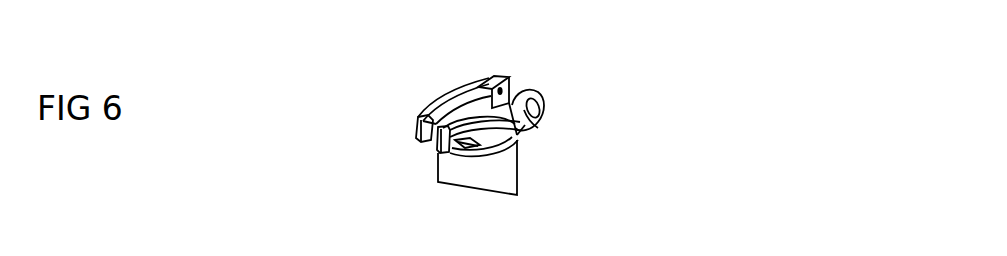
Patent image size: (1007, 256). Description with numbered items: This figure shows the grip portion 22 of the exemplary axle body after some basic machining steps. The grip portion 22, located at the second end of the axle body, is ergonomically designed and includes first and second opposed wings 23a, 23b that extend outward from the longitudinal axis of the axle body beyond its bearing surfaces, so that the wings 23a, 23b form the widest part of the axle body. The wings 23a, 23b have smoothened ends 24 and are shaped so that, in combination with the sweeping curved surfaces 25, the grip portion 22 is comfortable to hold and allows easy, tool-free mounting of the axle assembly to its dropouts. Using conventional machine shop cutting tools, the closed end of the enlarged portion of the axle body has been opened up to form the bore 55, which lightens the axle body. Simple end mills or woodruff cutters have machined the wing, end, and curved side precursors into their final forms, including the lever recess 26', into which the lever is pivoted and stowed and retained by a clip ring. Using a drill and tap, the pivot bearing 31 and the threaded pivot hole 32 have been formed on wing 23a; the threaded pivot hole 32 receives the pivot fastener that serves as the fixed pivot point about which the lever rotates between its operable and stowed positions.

The grip portion 22 is at (605, 117).
The first wing 23a is at (412, 146).
The second wing 23b is at (547, 117).
The smoothened ends 24 is at (506, 78).
The sweeping curved surfaces 25 is at (505, 137).
The lever recess 26' is at (455, 136).
The pivot bearing 31 is at (537, 124).
The threaded pivot hole 32 is at (510, 78).
The bore 55 is at (438, 85).